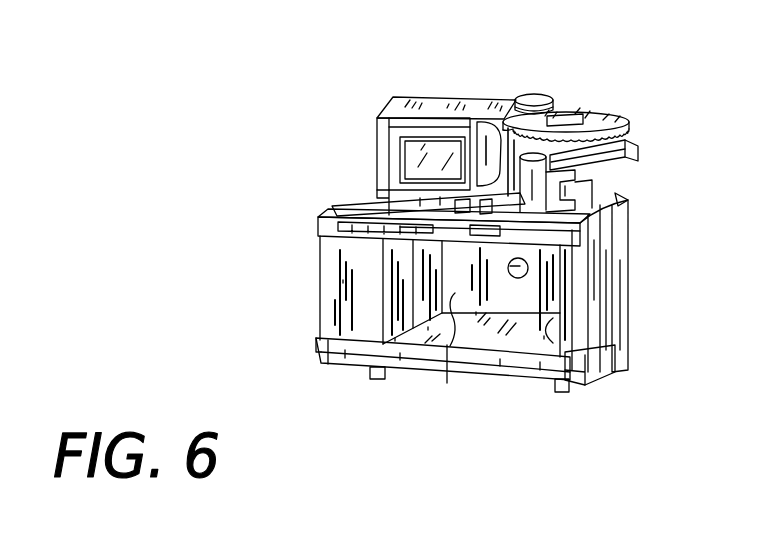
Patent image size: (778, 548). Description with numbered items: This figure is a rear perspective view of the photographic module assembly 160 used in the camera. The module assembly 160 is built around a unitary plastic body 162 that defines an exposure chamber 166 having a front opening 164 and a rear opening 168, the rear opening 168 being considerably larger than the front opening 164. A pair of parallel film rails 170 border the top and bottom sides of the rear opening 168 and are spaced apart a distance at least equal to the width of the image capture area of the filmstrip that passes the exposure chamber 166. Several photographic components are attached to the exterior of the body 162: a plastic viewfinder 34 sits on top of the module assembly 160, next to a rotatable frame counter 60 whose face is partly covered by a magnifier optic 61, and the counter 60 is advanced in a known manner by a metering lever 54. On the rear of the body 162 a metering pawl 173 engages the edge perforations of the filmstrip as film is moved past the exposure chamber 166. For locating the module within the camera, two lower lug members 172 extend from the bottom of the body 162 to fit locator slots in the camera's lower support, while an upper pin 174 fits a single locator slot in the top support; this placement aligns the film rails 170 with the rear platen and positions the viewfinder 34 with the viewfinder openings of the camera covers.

The photographic module assembly 160 is at (405, 73).
The plastic viewfinder 34 is at (408, 156).
The magnifier optic 61 is at (537, 94).
The rotatable frame counter 60 is at (616, 122).
The metering lever 54 is at (644, 157).
The upper pin 174 is at (395, 192).
The metering pawl 173 is at (325, 216).
The film rails 170 is at (318, 345).
The front opening 164 is at (508, 267).
The exposure chamber 166 is at (443, 377).
The unitary plastic body 162 is at (622, 252).
The rear opening 168 is at (613, 353).
The lower lug members 172 is at (556, 390).